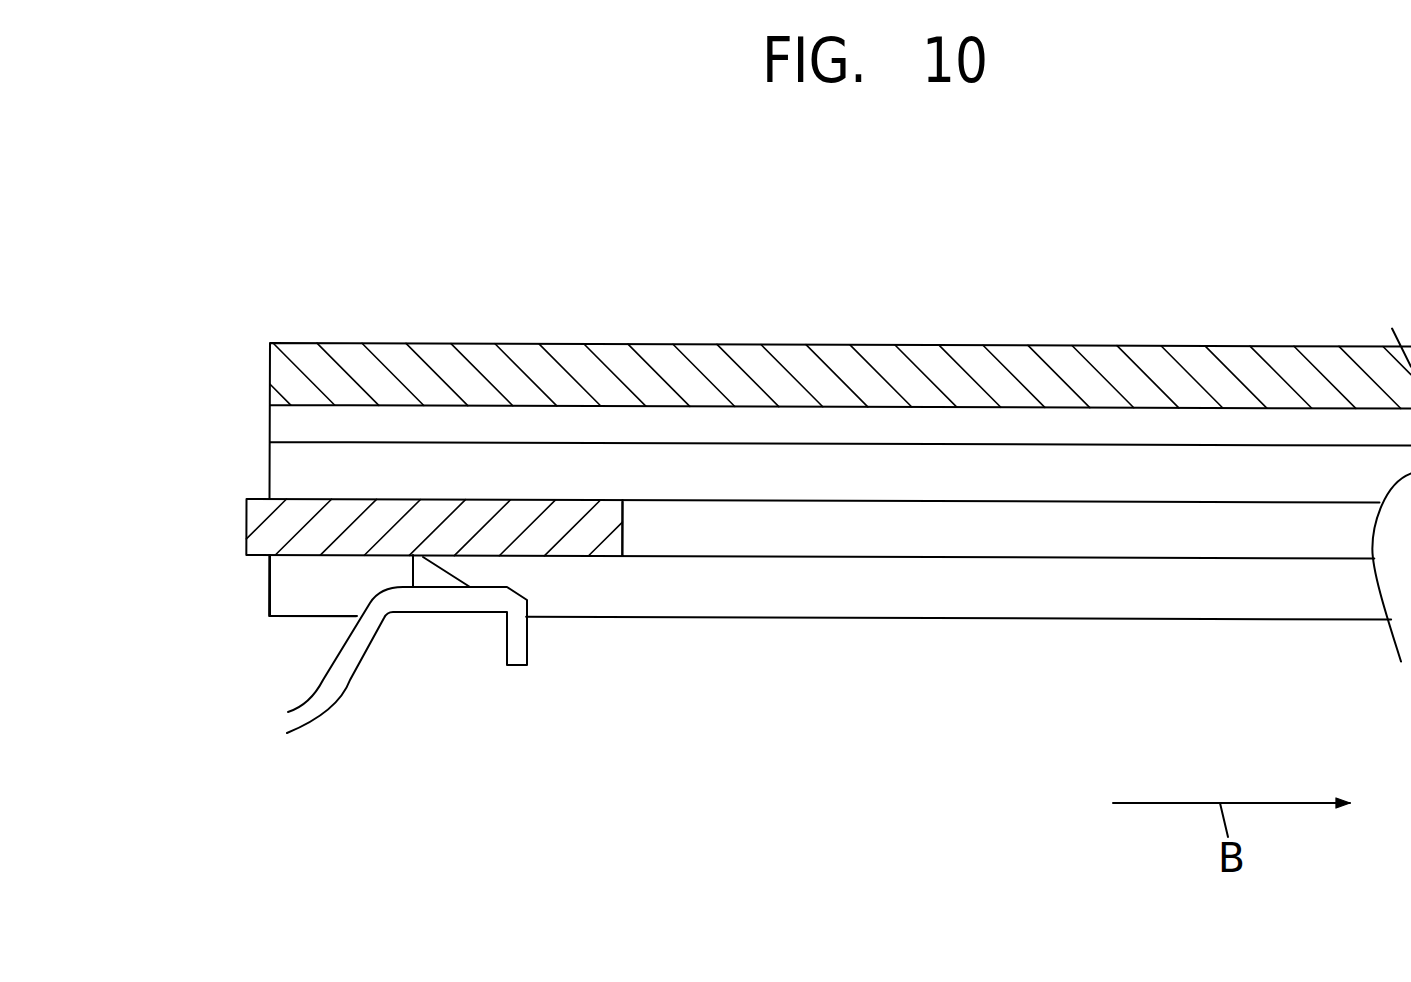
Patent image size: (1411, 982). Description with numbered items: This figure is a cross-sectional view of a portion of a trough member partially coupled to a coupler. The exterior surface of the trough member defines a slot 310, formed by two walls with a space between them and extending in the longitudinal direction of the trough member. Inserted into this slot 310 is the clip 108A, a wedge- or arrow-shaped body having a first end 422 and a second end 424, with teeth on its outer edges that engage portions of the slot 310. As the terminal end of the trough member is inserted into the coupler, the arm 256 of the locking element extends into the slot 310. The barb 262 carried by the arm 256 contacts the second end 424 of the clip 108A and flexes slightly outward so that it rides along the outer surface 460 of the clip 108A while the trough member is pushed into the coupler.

The slot 310 is at (960, 622).
The second end 424 is at (247, 522).
The clip 108A is at (588, 532).
The first end 422 is at (623, 530).
The barb 262 is at (428, 573).
The outer surface 460 is at (522, 557).
The arm 256 is at (305, 722).